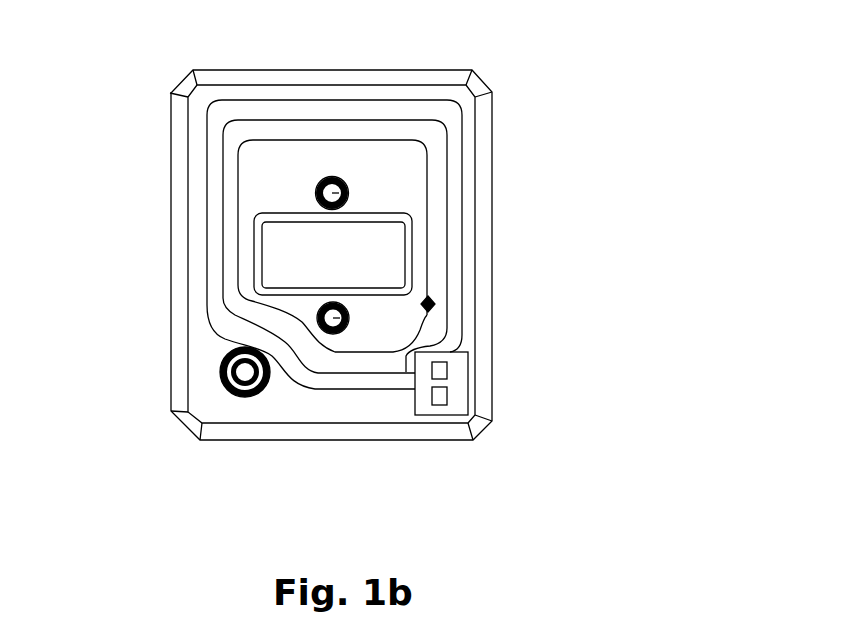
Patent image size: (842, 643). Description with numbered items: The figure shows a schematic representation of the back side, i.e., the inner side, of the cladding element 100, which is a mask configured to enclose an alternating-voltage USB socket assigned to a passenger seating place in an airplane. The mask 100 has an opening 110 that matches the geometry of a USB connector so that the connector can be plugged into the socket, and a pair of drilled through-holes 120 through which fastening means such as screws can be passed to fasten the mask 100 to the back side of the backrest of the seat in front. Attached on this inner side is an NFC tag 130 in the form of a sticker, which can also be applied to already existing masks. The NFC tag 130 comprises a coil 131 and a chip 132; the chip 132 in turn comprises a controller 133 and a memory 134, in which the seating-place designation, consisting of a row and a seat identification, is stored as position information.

The cladding element 100 is at (220, 407).
The opening 110 is at (355, 243).
The drilled through-holes 120 is at (333, 318).
The NFC tag 130 is at (588, 208).
The coil 131 is at (463, 255).
The chip 132 is at (498, 331).
The controller 133 is at (447, 368).
The memory 134 is at (447, 393).